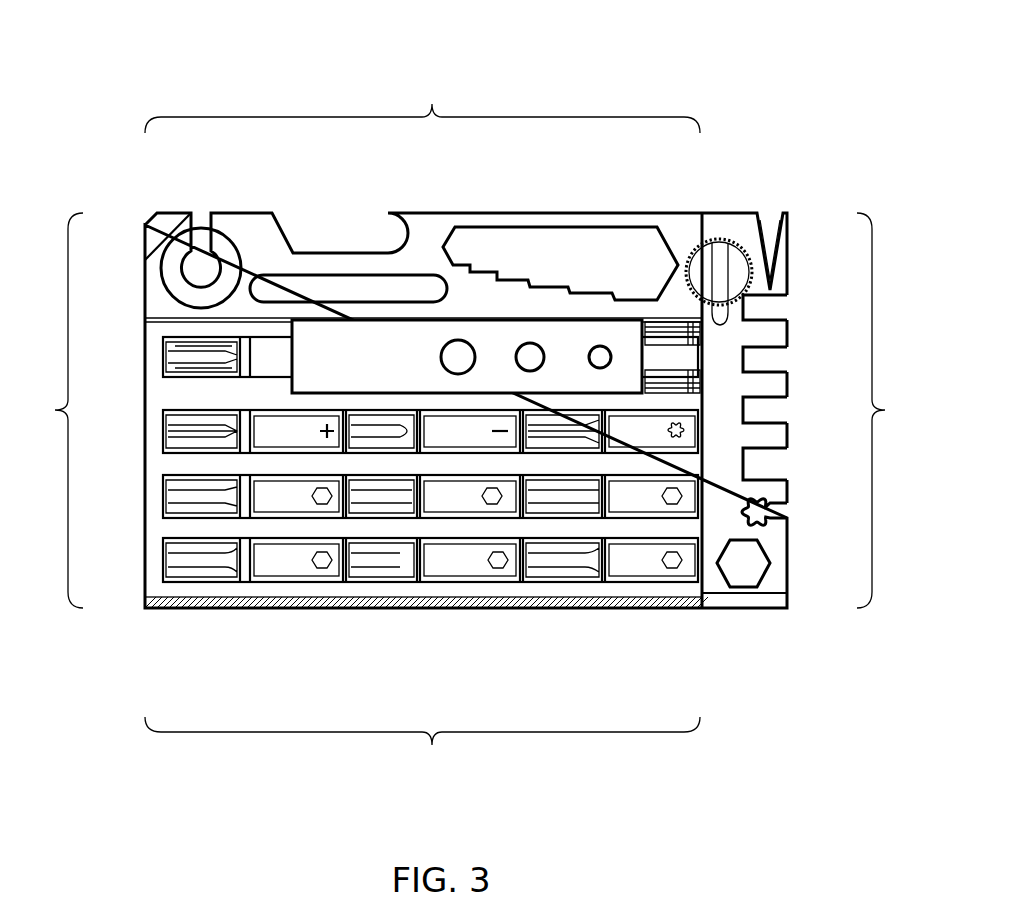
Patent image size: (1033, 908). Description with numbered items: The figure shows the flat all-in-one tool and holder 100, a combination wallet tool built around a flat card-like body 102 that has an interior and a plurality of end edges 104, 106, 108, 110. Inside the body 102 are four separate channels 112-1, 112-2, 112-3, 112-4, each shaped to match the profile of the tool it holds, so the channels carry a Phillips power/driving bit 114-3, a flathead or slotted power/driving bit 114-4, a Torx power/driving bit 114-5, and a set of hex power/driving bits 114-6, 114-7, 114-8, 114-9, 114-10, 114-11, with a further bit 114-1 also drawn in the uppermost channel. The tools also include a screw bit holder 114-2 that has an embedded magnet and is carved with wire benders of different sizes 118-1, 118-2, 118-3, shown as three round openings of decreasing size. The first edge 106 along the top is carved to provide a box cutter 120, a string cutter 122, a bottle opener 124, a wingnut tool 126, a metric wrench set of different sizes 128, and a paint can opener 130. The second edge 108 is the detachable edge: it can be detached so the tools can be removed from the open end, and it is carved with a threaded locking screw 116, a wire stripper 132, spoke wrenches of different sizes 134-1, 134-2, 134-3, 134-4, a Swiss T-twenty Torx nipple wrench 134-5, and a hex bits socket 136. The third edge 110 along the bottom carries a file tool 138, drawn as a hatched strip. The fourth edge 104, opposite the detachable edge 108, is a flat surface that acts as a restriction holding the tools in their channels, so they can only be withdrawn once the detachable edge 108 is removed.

The flat all-in-one tool and holder 100 is at (148, 50).
The flat card-like body 102 is at (155, 333).
The fourth edge 104 is at (47, 410).
The first edge 106 is at (422, 104).
The detachable edge 108 is at (892, 410).
The third edge 110 is at (422, 746).
The channel 112-1 is at (386, 264).
The channel 112-2 is at (396, 552).
The channel 112-3 is at (385, 565).
The channel 112-4 is at (385, 627).
The bit 114-1 is at (263, 357).
The screw bit holder 114-2 is at (378, 338).
The Phillips power/driving bit 114-3 is at (260, 445).
The flathead or slotted power/driving bit 114-4 is at (407, 455).
The Torx power/driving bit 114-5 is at (660, 452).
The hex power/driving bit 114-6 is at (283, 502).
The hex power/driving bit 114-7 is at (435, 495).
The hex power/driving bit 114-8 is at (607, 498).
The hex power/driving bit 114-9 is at (328, 558).
The hex power/driving bit 114-10 is at (465, 575).
The hex power/driving bit 114-11 is at (655, 560).
The threaded locking screw 116 is at (738, 258).
The wire bender 118-1 is at (452, 352).
The wire bender 118-2 is at (530, 352).
The wire bender 118-3 is at (600, 352).
The box cutter 120 is at (168, 216).
The string cutter 122 is at (202, 255).
The bottle opener 124 is at (292, 230).
The wingnut tool 126 is at (332, 290).
The metric wrench set 128 is at (490, 250).
The paint can opener 130 is at (680, 222).
The wire stripper 132 is at (772, 232).
The spoke wrench 134-1 is at (758, 311).
The spoke wrench 134-2 is at (758, 362).
The spoke wrench 134-3 is at (758, 412).
The spoke wrench 134-4 is at (758, 466).
The Swiss T-20 Torx nipple wrench 134-5 is at (765, 511).
The hex bits socket 136 is at (758, 568).
The file tool 138 is at (522, 608).